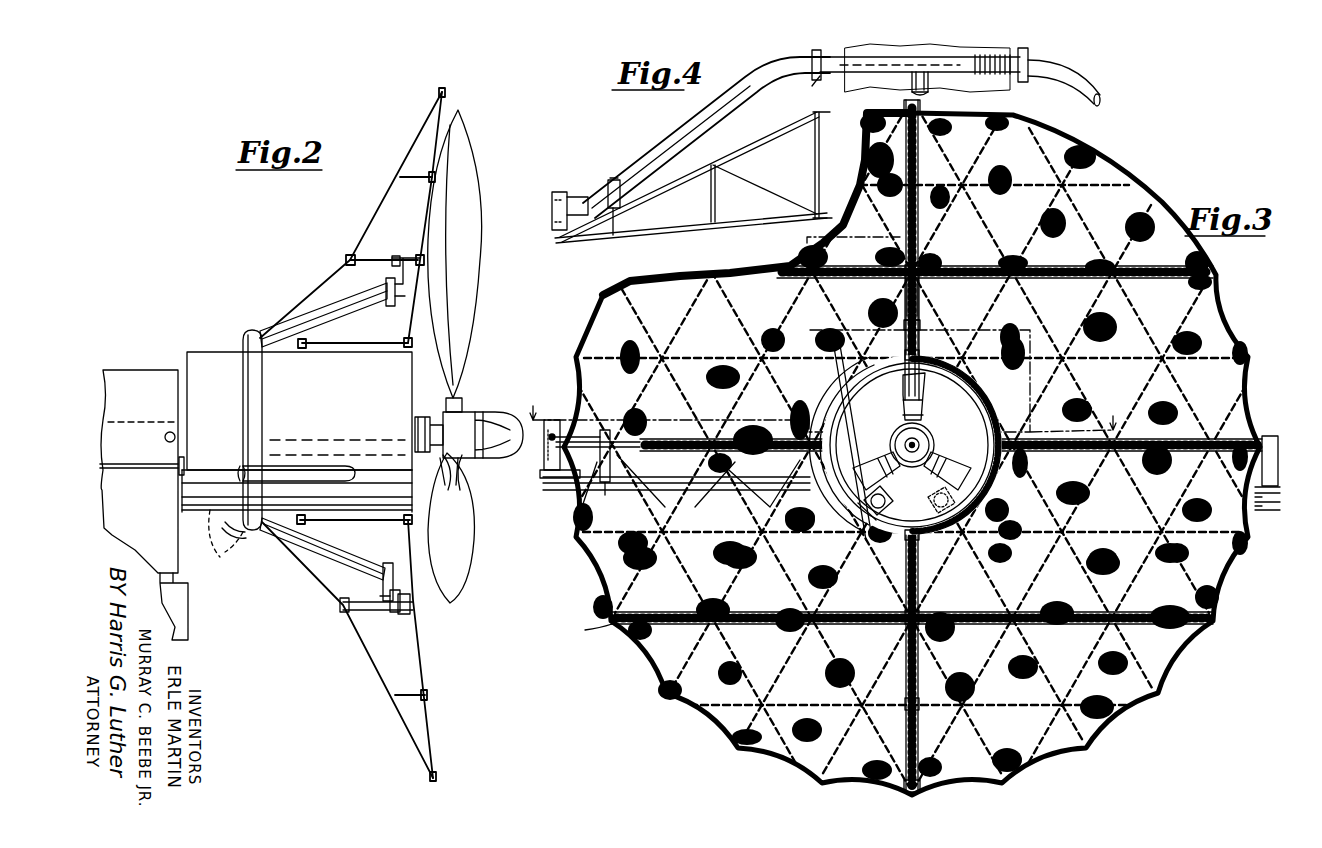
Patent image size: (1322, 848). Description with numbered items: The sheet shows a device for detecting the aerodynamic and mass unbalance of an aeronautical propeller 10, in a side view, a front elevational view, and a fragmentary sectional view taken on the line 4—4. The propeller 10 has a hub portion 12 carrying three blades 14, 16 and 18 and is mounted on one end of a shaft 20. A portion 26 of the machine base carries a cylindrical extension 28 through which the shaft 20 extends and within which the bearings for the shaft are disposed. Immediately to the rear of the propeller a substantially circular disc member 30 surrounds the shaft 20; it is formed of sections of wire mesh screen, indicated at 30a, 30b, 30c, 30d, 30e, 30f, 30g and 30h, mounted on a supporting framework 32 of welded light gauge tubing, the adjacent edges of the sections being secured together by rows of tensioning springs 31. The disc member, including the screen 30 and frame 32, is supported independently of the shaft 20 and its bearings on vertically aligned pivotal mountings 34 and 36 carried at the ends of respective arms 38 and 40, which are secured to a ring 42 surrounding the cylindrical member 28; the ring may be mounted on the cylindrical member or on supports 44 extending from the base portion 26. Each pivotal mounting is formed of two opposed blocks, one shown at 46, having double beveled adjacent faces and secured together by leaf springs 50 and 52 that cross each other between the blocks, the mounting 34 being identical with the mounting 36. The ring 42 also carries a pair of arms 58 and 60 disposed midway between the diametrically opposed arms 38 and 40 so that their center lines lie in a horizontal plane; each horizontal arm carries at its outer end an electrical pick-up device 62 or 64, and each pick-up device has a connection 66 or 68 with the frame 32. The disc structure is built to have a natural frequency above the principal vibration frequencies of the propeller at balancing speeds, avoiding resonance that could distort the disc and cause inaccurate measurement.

In FIG. 2, the aeronautical propeller 10 is at (472, 404).
In FIG. 3, the aeronautical propeller 10 is at (922, 432).
In FIG. 3, the hub portion 12 is at (893, 436).
In FIG. 2, the blade 14 is at (480, 278).
In FIG. 3, the blade 14 is at (900, 398).
In FIG. 2, the blade 16 is at (474, 540).
In FIG. 3, the blade 16 is at (865, 464).
In FIG. 3, the blade 18 is at (970, 476).
In FIG. 2, the shaft 20 is at (430, 420).
In FIG. 2, the machine base portion 26 is at (160, 368).
In FIG. 2, the cylindrical extension 28 is at (210, 352).
In FIG. 4, the cylindrical extension 28 is at (1020, 52).
In FIG. 3, the cylindrical extension 28 is at (985, 398).
In FIG. 3, the disc member 30 is at (600, 590).
In FIG. 3, the screen section 30a is at (715, 700).
In FIG. 3, the screen section 30b is at (1110, 697).
In FIG. 3, the screen section 30c is at (1220, 555).
In FIG. 3, the screen section 30d is at (1200, 330).
In FIG. 3, the screen section 30e is at (1100, 188).
In FIG. 3, the screen section 30f is at (862, 138).
In FIG. 3, the screen section 30g is at (630, 330).
In FIG. 3, the screen section 30h is at (590, 552).
In FIG. 3, the tensioning springs 31 is at (605, 626).
In FIG. 2, the supporting framework 32 is at (380, 210).
In FIG. 4, the supporting framework 32 is at (782, 140).
In FIG. 3, the supporting framework 32 is at (740, 520).
In FIG. 2, the pivotal mounting 34 is at (386, 282).
In FIG. 3, the pivotal mounting 34 is at (945, 300).
In FIG. 2, the pivotal mounting 36 is at (400, 612).
In FIG. 3, the pivotal mounting 36 is at (920, 600).
In FIG. 2, the arm 38 is at (310, 312).
In FIG. 4, the arm 38 is at (932, 86).
In FIG. 3, the arm 38 is at (904, 318).
In FIG. 2, the arm 40 is at (320, 572).
In FIG. 3, the arm 40 is at (882, 578).
In FIG. 2, the ring 42 is at (258, 330).
In FIG. 4, the ring 42 is at (828, 80).
In FIG. 3, the ring 42 is at (835, 384).
In FIG. 2, the supports 44 is at (227, 544).
In FIG. 3, the supports 44 is at (898, 498).
In FIG. 2, the block 46 is at (388, 563).
In FIG. 2, the leaf spring 50 is at (404, 600).
In FIG. 2, the leaf spring 52 is at (388, 598).
In FIG. 2, the arm 58 is at (305, 470).
In FIG. 4, the arm 58 is at (690, 126).
In FIG. 3, the arm 58 is at (556, 462).
In FIG. 4, the arm 60 is at (1090, 86).
In FIG. 3, the arm 60 is at (1268, 510).
In FIG. 4, the electrical pick-up device 62 is at (545, 204).
In FIG. 3, the electrical pick-up device 62 is at (540, 470).
In FIG. 3, the electrical pick-up device 64 is at (1278, 468).
In FIG. 3, the connection 66 is at (552, 434).
In FIG. 3, the connection 68 is at (1276, 436).
In FIG. 3, the section line 4- 4 is at (819, 381).